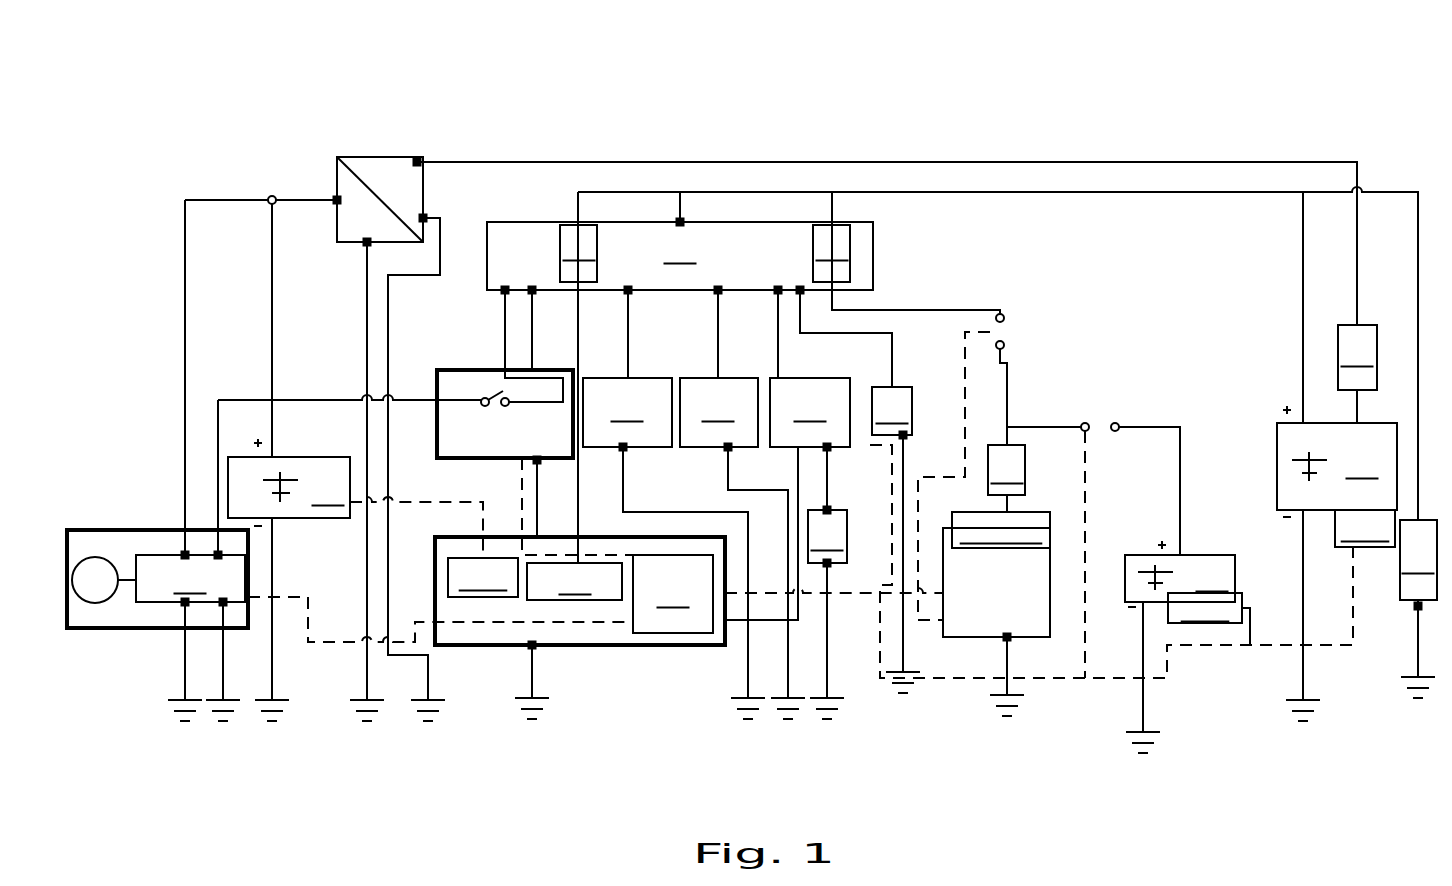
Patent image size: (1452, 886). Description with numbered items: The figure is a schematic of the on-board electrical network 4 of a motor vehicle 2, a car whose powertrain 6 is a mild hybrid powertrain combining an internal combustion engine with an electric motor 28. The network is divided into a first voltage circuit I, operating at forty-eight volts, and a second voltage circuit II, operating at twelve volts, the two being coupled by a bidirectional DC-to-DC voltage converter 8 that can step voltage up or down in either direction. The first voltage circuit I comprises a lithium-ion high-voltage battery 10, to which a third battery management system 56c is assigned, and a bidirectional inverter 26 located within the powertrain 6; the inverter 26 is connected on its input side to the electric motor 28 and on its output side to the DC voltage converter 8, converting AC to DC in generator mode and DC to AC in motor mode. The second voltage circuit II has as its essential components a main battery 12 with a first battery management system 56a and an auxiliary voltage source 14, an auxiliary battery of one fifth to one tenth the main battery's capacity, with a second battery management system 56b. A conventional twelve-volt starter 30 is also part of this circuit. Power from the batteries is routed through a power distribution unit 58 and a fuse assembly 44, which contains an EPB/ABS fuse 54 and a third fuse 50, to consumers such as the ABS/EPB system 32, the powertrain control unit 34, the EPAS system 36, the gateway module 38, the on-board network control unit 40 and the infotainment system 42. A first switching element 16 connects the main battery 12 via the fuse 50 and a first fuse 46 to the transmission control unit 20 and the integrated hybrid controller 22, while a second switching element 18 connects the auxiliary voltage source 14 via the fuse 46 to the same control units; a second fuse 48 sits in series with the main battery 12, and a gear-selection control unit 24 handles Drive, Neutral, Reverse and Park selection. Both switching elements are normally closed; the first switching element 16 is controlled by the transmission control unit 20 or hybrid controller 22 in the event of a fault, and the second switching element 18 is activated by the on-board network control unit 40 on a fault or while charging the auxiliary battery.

The first voltage circuit I is at (218, 150).
The second voltage circuit II is at (533, 133).
The motor vehicle 2 is at (887, 180).
The on-board electrical network 4 is at (1237, 125).
The powertrain 6 is at (118, 503).
The DC-to-DC voltage converter 8 is at (370, 157).
The high-voltage battery 10 is at (289, 482).
The main battery 12 is at (1337, 563).
The auxiliary voltage source 14 is at (1180, 647).
The first switching element 16 is at (1005, 322).
The second switching element 18 is at (1097, 425).
The transmission control unit 20 is at (996, 614).
The integrated hybrid controller 22 is at (996, 614).
The gear-selection control unit 24 is at (896, 540).
The inverter 26 is at (190, 560).
The electric motor 28 is at (94, 604).
The starter 30 is at (1418, 609).
The ABS/EPB system 32 is at (574, 581).
The powertrain control unit 34 is at (673, 594).
The EPAS system 36 is at (674, 548).
The gateway module 38 is at (742, 548).
The on-board network control unit 40 is at (787, 499).
The infotainment system 42 is at (827, 613).
The fuse assembly 44 is at (689, 303).
The first fuse 46 is at (1006, 478).
The second fuse 48 is at (1357, 374).
The third fuse 50 is at (831, 253).
The EPB/ABS fuse 54 is at (578, 253).
The first battery management system 56a is at (1365, 528).
The second battery management system 56b is at (1209, 619).
The third battery management system 56c is at (483, 577).
The power distribution unit 58 is at (457, 370).